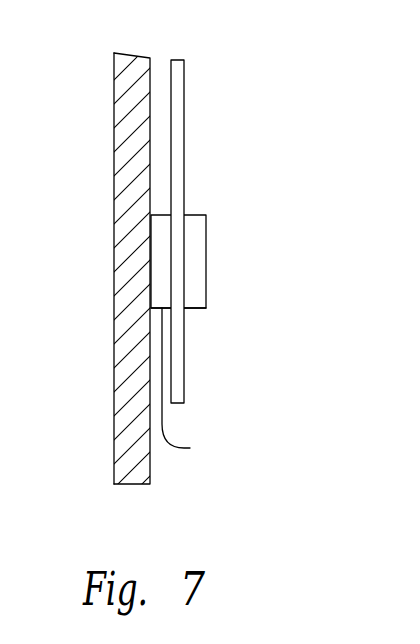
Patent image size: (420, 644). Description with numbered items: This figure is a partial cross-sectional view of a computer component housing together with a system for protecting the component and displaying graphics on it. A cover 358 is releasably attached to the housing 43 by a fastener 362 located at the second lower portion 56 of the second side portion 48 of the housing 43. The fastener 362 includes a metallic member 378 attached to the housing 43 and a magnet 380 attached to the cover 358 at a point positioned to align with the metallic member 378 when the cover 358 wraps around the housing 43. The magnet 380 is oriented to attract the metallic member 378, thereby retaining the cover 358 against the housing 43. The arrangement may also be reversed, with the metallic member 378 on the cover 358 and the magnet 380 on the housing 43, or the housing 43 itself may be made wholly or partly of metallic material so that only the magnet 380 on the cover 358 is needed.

The housing 43 is at (140, 53).
The second side portion 48 is at (114, 128).
The second lower portion 56 is at (114, 372).
The cover 358 is at (184, 85).
The fastener 362 is at (252, 263).
The magnet 380 is at (206, 292).
The metallic member 378 is at (196, 386).